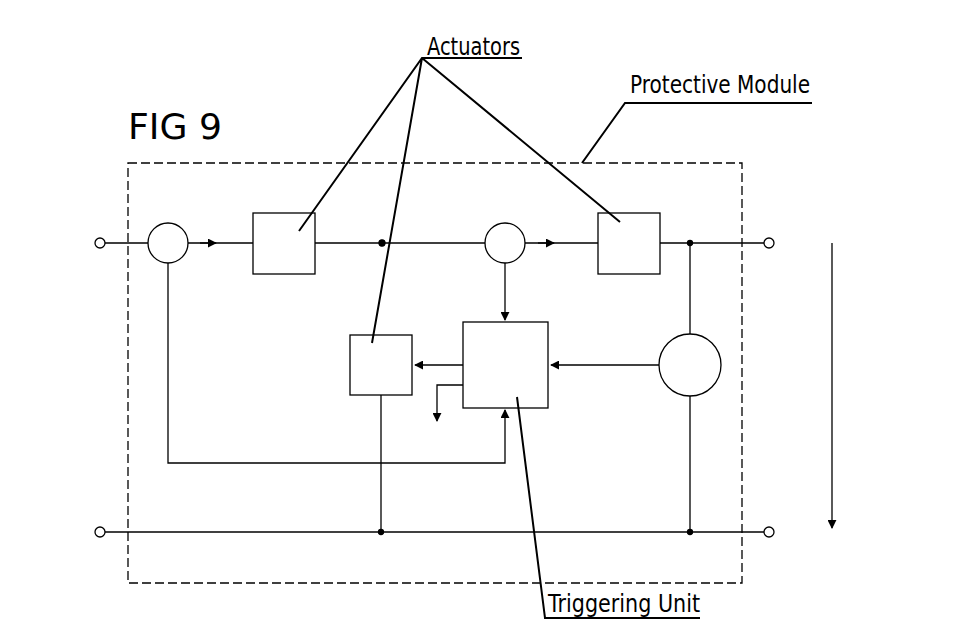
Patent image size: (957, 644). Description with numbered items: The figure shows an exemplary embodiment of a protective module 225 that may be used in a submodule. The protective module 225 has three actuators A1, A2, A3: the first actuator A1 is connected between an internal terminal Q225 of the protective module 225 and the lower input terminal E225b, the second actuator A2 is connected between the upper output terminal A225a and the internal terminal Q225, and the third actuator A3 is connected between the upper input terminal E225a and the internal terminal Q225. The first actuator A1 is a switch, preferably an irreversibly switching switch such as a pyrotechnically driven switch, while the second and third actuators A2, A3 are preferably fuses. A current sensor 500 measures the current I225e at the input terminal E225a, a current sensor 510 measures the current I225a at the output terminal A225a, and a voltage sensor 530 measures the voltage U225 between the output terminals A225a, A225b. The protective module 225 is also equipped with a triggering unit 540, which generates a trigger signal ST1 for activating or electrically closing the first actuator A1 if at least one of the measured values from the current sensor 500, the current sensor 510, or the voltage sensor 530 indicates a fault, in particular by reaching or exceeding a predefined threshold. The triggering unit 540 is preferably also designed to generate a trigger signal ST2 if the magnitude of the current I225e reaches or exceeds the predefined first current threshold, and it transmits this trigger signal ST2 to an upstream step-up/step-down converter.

The protective module 225 is at (436, 163).
The current sensor 500 is at (178, 261).
The current sensor 510 is at (514, 261).
The voltage sensor 530 is at (721, 365).
The triggering unit 540 is at (530, 409).
The first actuator A1 is at (360, 395).
The second actuator A2 is at (632, 274).
The third actuator A3 is at (282, 274).
The upper input terminal E225a is at (97, 238).
The lower input terminal E225b is at (97, 527).
The upper output terminal A225a is at (773, 238).
The lower output terminal A225b is at (773, 527).
The input current I225e is at (219, 226).
The output current I225a is at (559, 226).
The internal terminal Q225 is at (383, 242).
The output voltage U225 is at (861, 385).
The trigger signal ST1 is at (439, 348).
The second trigger signal ST2 is at (461, 414).